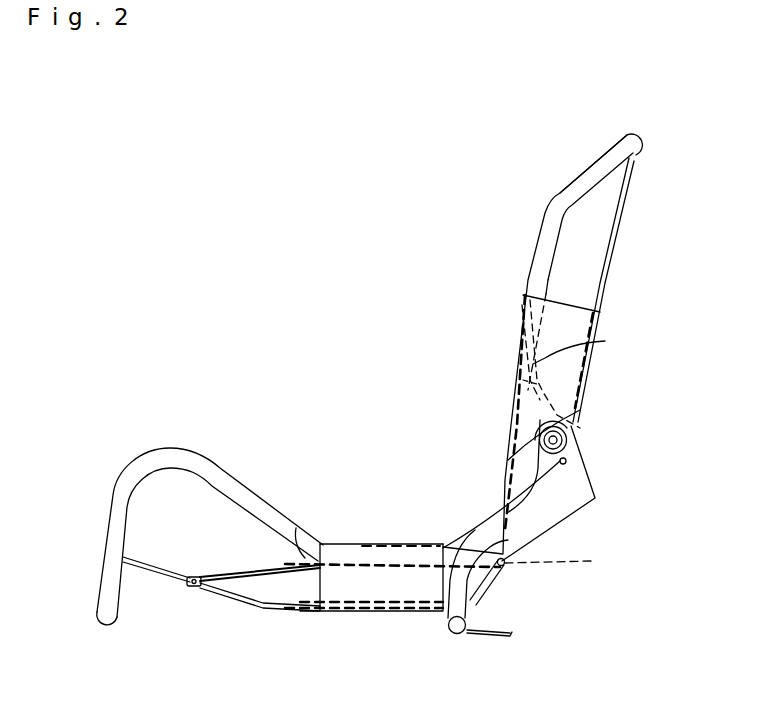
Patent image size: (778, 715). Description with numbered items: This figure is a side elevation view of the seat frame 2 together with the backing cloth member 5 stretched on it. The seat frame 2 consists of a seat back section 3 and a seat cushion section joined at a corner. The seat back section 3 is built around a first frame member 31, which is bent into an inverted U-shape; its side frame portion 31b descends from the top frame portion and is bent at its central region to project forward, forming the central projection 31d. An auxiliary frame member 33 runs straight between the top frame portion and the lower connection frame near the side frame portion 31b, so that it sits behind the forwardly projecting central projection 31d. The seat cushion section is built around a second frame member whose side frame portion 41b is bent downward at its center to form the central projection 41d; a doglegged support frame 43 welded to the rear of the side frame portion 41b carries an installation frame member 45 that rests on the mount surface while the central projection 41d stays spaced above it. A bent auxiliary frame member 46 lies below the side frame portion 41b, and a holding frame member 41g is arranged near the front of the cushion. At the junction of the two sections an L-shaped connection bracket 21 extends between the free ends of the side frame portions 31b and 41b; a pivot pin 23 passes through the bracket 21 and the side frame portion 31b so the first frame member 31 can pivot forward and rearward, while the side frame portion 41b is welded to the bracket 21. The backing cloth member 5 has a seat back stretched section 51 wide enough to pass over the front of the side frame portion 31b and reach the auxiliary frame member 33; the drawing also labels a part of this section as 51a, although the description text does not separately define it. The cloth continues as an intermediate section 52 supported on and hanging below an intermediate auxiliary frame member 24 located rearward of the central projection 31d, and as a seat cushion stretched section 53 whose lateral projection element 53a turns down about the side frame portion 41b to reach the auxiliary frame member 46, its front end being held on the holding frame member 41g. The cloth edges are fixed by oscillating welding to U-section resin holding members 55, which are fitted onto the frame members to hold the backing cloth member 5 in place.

The seat frame 2 is at (611, 149).
The seat back section 3 is at (565, 193).
The backing cloth member 5 is at (505, 393).
The connection bracket 21 is at (574, 501).
The pivot pin 23 is at (568, 442).
The intermediate auxiliary frame member 24 is at (507, 563).
The first frame member 31 is at (641, 143).
The side frame portion 31b is at (587, 176).
The central projection 31d is at (533, 256).
The auxiliary frame member 33 is at (614, 243).
The side frame portion 41b is at (238, 486).
The central projection 41d is at (362, 550).
The holding frame member 41g is at (192, 588).
The support frame 43 is at (460, 592).
The installation frame member 45 is at (455, 634).
The auxiliary frame member 46 is at (283, 611).
The seat back stretched section 51 is at (572, 315).
The reinforcing brace 51a is at (607, 341).
The intermediate section 52 is at (420, 488).
The seat cushion stretched section 53 is at (296, 535).
The projection element 53a is at (378, 598).
The holding member 55 is at (207, 588).